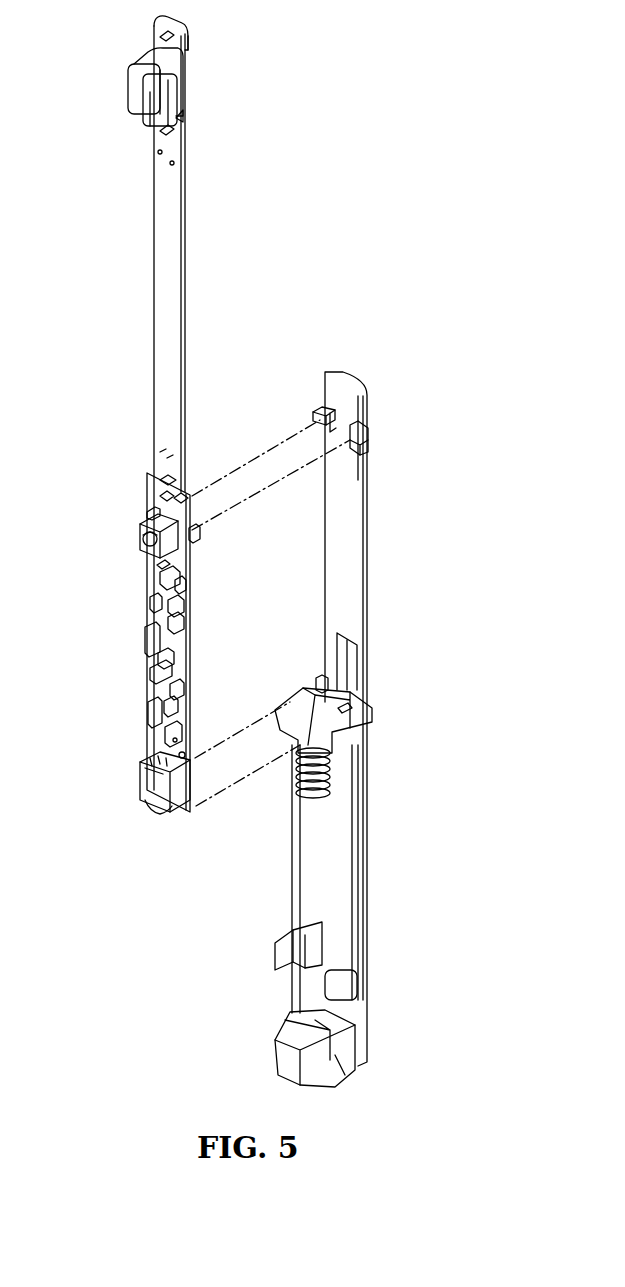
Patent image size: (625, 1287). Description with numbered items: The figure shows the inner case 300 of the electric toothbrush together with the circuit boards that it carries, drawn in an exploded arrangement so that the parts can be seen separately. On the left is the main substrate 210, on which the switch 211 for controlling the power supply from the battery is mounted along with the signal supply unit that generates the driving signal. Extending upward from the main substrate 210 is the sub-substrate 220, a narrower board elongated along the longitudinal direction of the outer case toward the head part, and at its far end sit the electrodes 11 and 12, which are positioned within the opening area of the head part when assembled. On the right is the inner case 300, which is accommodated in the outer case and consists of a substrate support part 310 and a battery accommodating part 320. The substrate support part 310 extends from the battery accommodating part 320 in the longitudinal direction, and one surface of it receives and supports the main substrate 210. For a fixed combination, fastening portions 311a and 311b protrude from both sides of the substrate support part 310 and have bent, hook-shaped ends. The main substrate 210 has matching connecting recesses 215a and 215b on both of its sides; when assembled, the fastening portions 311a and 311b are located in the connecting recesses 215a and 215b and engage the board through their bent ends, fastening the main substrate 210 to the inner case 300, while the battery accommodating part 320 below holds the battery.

The electrode 11 is at (147, 102).
The electrode 12 is at (130, 84).
The main substrate 210 is at (150, 712).
The switch 211 is at (142, 540).
The connecting recess 215a is at (193, 538).
The connecting recess 215b is at (150, 512).
The sub-substrate 220 is at (162, 282).
The inner case 300 is at (382, 749).
The substrate support part 310 is at (375, 520).
The fastening portion 311a is at (372, 440).
The fastening portion 311b is at (316, 414).
The battery accommodating part 320 is at (305, 861).